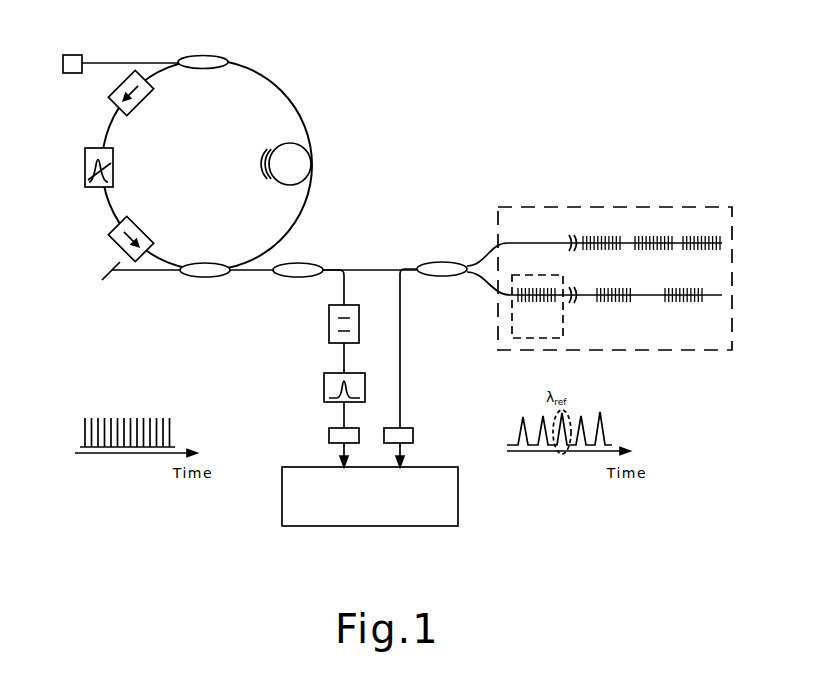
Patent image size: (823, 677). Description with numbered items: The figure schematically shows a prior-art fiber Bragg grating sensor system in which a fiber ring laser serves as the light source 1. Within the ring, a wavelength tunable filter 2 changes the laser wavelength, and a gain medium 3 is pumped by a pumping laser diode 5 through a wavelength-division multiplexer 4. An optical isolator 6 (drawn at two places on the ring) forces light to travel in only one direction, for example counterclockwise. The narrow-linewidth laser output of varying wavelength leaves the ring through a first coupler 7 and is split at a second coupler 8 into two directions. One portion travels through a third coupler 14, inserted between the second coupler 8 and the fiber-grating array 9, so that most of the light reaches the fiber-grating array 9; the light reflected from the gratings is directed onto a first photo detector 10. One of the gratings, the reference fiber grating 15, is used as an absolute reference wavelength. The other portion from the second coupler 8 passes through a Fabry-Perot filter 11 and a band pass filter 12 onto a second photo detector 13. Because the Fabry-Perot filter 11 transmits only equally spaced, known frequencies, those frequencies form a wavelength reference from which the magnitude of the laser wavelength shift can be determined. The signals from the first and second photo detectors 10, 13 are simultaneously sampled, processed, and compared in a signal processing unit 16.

The light source 1 is at (282, 91).
The wavelength tunable filter 2 is at (85, 149).
The gain medium 3 is at (303, 145).
The wavelength-division multiplexer 4 is at (205, 56).
The pumping laser diode 5 is at (63, 57).
The optical isolator 6 is at (112, 95).
The first coupler 7 is at (207, 263).
The second coupler 8 is at (302, 263).
The fiber-grating array 9 is at (625, 207).
The first photo detector 10 is at (413, 432).
The Fabry-Perot filter 11 is at (329, 307).
The band pass filter 12 is at (324, 378).
The second photo detector 13 is at (329, 432).
The third coupler 14 is at (442, 262).
The reference fiber grating 15 is at (512, 340).
The signal processing unit 16 is at (458, 497).